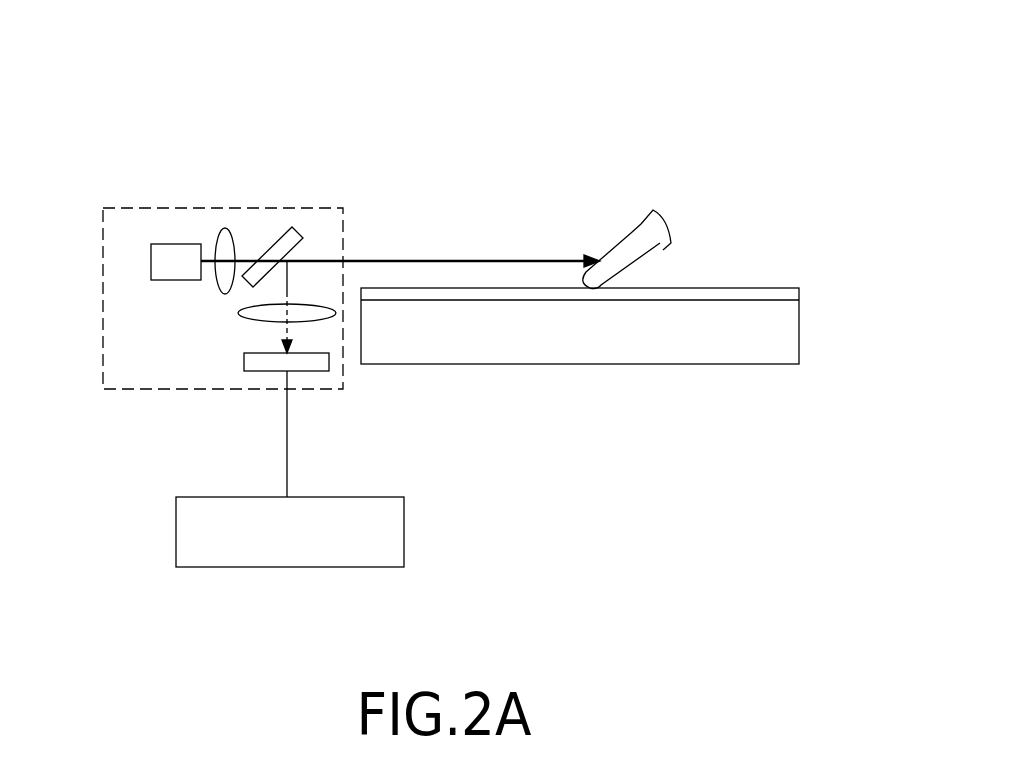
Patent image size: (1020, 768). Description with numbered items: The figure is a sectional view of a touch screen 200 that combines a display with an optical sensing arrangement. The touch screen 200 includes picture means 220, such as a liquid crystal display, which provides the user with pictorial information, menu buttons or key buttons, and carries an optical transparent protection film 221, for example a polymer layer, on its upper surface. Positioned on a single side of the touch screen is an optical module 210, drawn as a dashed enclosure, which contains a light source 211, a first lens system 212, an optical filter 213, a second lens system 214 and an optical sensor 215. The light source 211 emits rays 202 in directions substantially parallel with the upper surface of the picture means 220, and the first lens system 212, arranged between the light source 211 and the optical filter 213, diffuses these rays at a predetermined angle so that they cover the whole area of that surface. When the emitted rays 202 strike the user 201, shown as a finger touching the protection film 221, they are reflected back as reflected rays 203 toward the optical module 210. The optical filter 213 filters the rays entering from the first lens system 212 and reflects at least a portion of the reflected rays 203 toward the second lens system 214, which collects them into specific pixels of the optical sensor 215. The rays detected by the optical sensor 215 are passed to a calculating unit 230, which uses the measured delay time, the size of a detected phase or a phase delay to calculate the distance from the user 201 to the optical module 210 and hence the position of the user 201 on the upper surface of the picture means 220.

The touch screen 200 is at (492, 53).
The user (reflectable object) 201 is at (628, 234).
The emitted rays 202 is at (438, 258).
The reflected rays 203 is at (287, 292).
The optical module 210 is at (126, 198).
The light source 211 is at (173, 243).
The first lens system 212 is at (235, 227).
The optical filter 213 is at (301, 226).
The second lens system 214 is at (238, 314).
The optical sensor 215 is at (318, 372).
The picture means 220 is at (792, 332).
The optical transparent protection film 221 is at (792, 294).
The calculating unit 230 is at (404, 530).